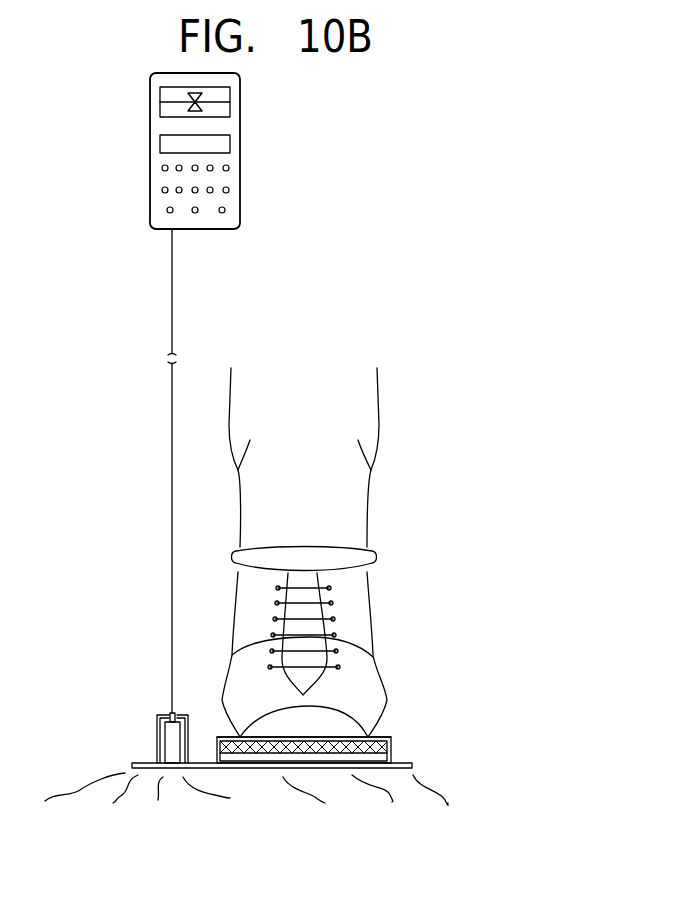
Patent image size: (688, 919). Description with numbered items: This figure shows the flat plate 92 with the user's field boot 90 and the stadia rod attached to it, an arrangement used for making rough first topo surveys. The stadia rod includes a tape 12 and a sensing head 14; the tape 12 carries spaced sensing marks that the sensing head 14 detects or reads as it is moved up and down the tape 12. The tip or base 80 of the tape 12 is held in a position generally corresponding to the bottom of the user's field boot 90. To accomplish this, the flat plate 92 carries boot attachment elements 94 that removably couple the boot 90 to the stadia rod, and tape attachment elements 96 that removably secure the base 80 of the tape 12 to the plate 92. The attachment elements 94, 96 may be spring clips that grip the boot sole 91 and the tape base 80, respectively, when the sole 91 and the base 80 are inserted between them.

The sensing head 14 is at (240, 148).
The tape 12 is at (172, 297).
The field boot 90 is at (365, 602).
The tape attachment elements 96 is at (157, 722).
The base 80 is at (172, 742).
The flat plate 92 is at (203, 760).
The boot sole 91 is at (382, 737).
The boot attachment elements 94 is at (392, 745).